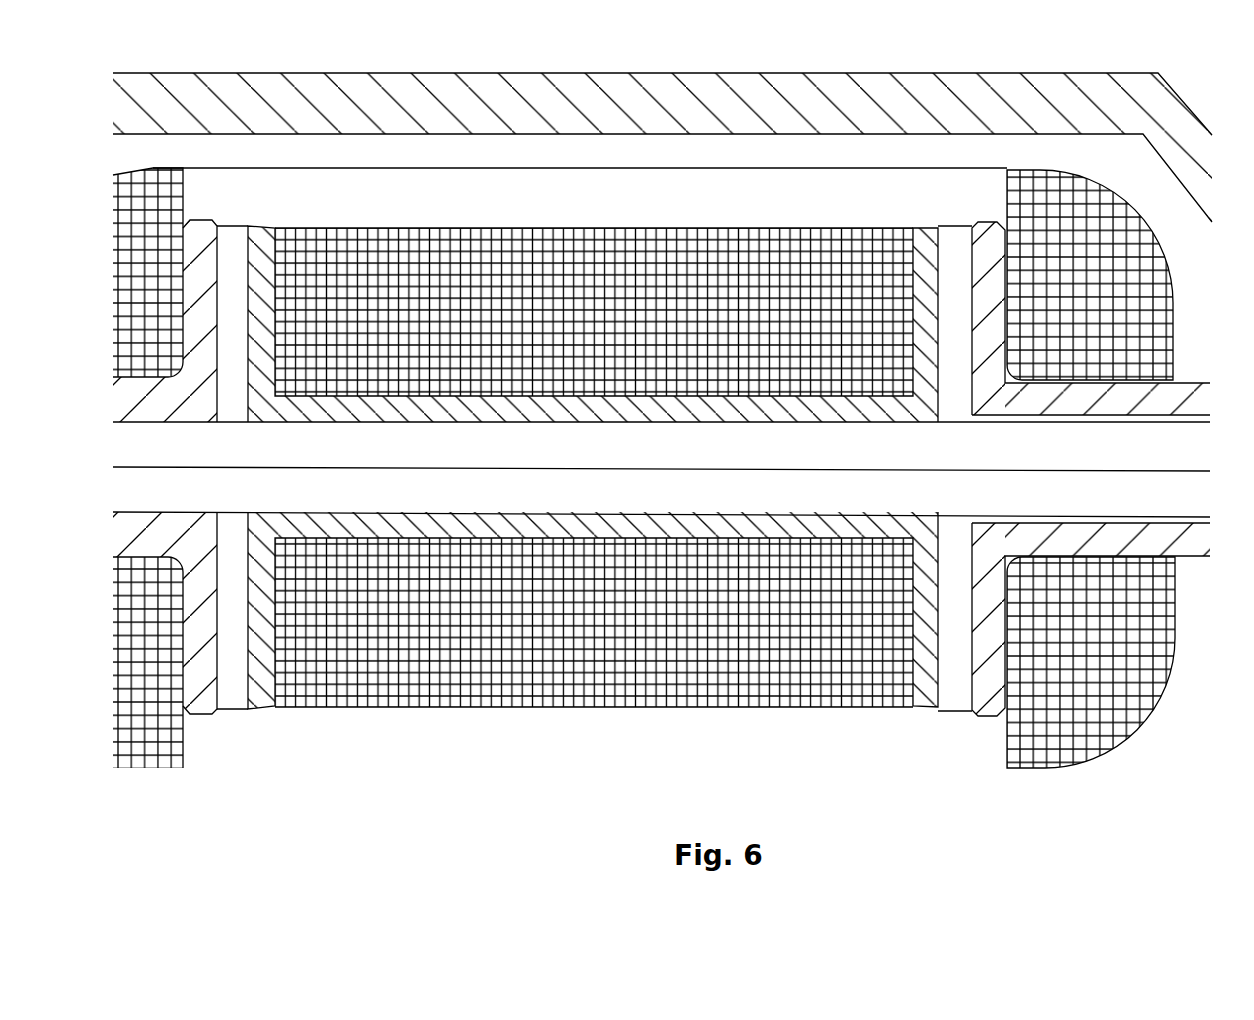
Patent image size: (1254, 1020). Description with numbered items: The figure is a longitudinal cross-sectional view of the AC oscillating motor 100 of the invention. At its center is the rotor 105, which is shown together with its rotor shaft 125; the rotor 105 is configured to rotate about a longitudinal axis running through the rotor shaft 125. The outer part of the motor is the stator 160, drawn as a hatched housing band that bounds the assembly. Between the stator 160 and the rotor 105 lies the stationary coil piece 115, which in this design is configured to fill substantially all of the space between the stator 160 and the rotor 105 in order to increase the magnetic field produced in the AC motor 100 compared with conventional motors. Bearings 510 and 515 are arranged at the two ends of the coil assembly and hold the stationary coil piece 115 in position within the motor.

The AC motor 100 is at (700, 25).
The rotor 105 is at (942, 192).
The second stationary coil piece 115 is at (1108, 270).
The rotor shaft 125 is at (972, 442).
The stator 160 is at (333, 117).
The bearing 510 is at (990, 237).
The bearing 515 is at (198, 270).